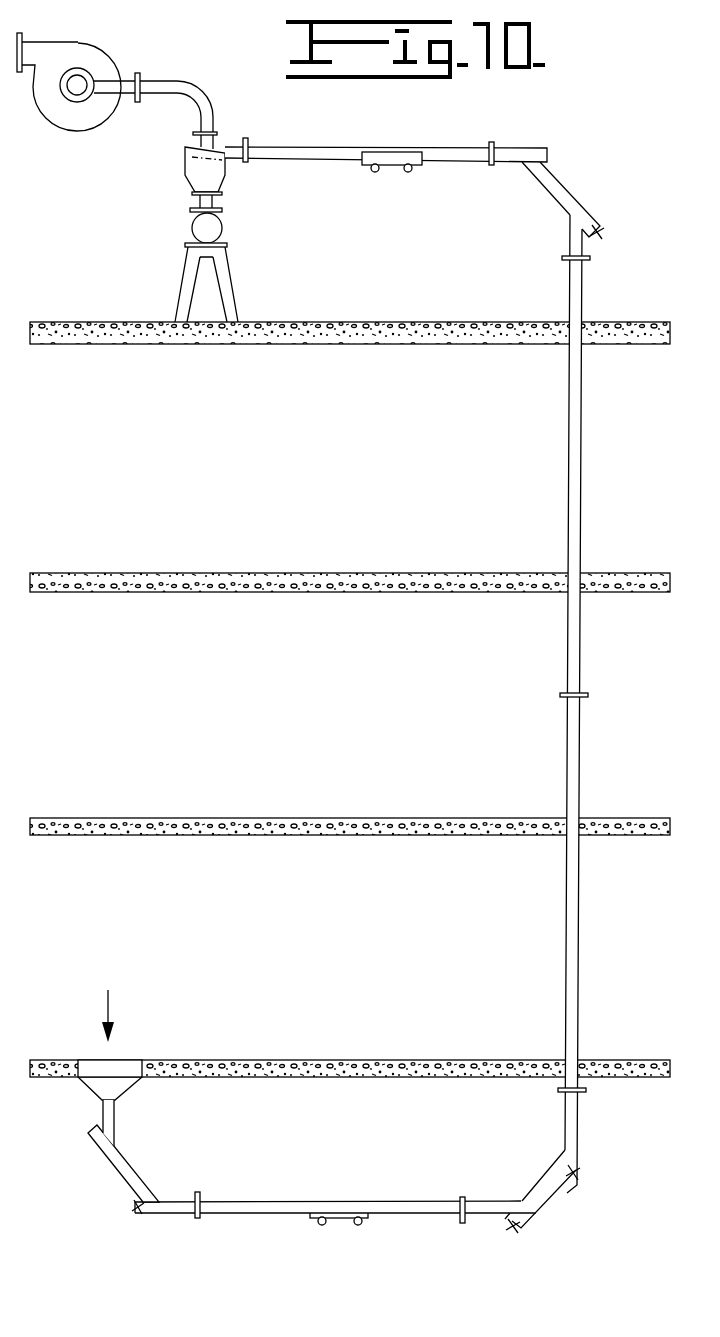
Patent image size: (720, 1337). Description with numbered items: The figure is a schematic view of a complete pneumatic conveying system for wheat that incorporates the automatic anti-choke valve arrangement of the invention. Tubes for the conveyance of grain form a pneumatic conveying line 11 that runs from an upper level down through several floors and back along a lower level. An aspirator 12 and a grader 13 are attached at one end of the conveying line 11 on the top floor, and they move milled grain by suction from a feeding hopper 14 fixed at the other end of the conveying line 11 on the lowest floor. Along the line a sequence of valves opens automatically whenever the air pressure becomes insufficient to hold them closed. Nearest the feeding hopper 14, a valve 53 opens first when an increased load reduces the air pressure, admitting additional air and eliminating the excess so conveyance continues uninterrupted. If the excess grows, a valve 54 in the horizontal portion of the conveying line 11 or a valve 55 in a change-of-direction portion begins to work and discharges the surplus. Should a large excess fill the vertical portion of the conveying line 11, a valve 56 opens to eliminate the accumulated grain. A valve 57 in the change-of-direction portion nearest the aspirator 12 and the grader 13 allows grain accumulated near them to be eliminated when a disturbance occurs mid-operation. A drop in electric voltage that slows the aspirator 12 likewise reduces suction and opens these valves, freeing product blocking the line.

The pneumatic conveying line 11 is at (590, 450).
The aspirator 12 is at (60, 47).
The grader 13 is at (193, 173).
The feeding hopper 14 is at (122, 1060).
The valve 53 is at (132, 1207).
The valve 54 is at (388, 155).
The valve 55 is at (508, 1232).
The valve 56 is at (578, 1190).
The valve 57 is at (597, 240).